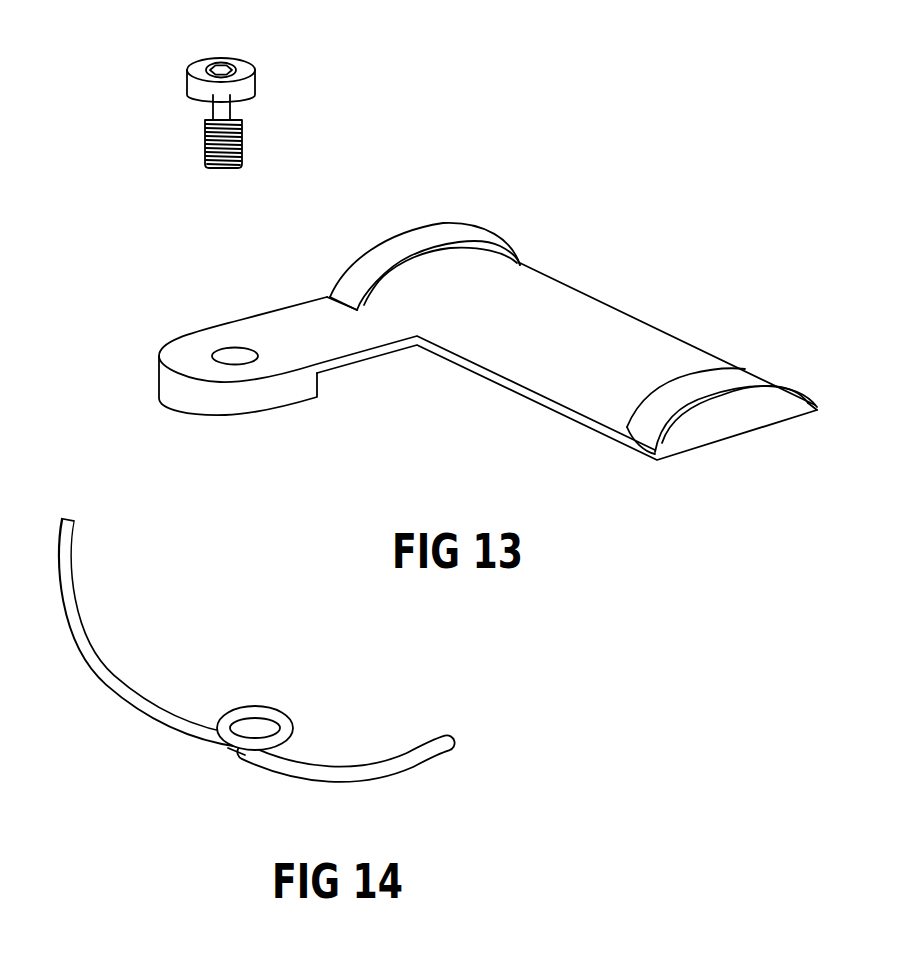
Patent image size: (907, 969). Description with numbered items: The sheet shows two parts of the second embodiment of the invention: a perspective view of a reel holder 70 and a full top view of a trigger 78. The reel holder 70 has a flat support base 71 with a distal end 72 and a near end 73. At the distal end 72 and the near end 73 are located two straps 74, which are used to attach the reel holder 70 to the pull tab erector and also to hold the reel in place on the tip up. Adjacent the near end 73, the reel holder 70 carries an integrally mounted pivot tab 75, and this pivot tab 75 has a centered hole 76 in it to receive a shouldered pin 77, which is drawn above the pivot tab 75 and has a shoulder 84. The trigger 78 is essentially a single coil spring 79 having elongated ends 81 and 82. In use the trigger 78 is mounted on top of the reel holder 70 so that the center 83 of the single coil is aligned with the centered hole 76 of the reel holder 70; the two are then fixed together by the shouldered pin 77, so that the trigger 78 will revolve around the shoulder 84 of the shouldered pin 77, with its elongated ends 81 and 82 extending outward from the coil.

In FIG. 13, the reel holder 70 is at (496, 338).
In FIG. 13, the flat support base 71 is at (690, 350).
In FIG. 13, the distal end 72 is at (822, 405).
In FIG. 13, the near end 73 is at (420, 243).
In FIG. 13, the straps 74 is at (463, 238).
In FIG. 13, the pivot tab 75 is at (250, 415).
In FIG. 13, the centered hole 76 is at (230, 355).
In FIG. 13, the shouldered pin 77 is at (168, 86).
In FIG. 13, the shoulder 84 is at (203, 130).
In FIG. 14, the trigger 78 is at (265, 659).
In FIG. 14, the single coil spring 79 is at (233, 752).
In FIG. 14, the elongated end 81 is at (70, 518).
In FIG. 14, the elongated end 82 is at (413, 777).
In FIG. 14, the center of the single coil 83 is at (257, 728).